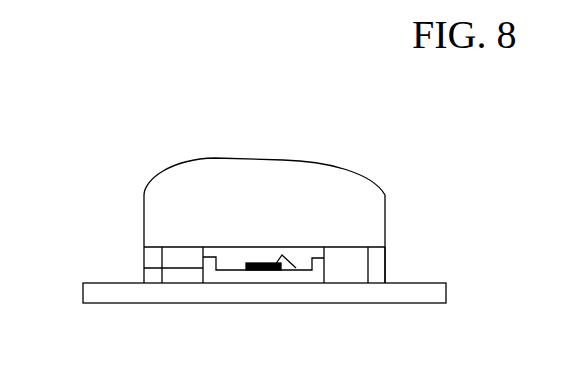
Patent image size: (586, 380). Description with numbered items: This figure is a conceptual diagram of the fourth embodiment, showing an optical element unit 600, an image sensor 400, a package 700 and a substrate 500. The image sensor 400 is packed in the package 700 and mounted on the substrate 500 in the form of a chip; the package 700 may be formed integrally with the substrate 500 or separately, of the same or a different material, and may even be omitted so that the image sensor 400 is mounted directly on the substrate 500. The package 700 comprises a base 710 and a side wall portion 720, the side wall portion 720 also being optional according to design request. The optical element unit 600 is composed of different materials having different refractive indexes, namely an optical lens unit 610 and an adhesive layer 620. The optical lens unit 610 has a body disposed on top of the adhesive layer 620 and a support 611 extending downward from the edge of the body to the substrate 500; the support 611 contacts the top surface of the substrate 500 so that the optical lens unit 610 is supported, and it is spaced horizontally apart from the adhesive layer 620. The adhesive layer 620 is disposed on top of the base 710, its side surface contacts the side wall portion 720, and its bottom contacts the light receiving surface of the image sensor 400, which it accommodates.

The image sensor 400 is at (252, 263).
The substrate 500 is at (423, 291).
The optical element unit 600 is at (339, 218).
The optical lens unit 610 is at (360, 203).
The adhesive layer 620 is at (385, 246).
The support 611 is at (383, 265).
The package 700 is at (177, 231).
The base 710 is at (146, 267).
The side wall portion 720 is at (227, 279).